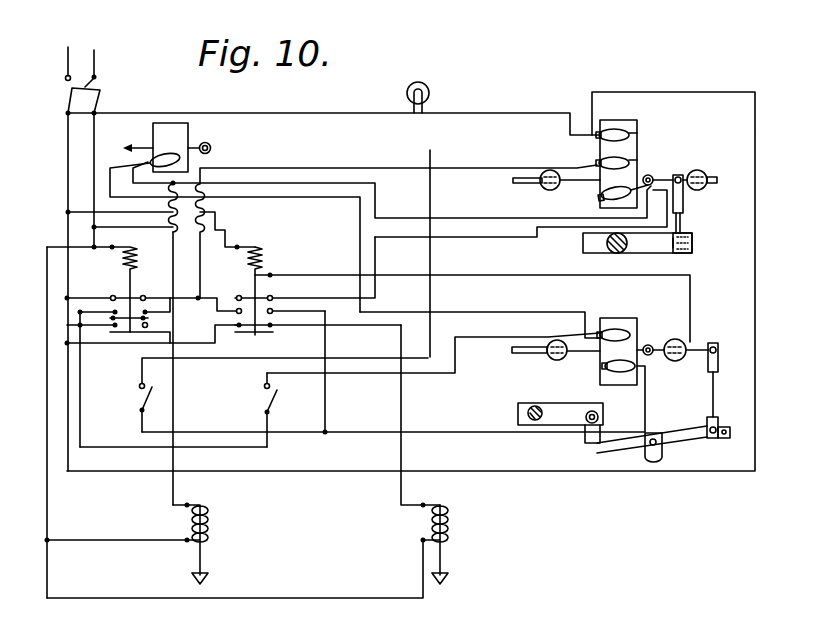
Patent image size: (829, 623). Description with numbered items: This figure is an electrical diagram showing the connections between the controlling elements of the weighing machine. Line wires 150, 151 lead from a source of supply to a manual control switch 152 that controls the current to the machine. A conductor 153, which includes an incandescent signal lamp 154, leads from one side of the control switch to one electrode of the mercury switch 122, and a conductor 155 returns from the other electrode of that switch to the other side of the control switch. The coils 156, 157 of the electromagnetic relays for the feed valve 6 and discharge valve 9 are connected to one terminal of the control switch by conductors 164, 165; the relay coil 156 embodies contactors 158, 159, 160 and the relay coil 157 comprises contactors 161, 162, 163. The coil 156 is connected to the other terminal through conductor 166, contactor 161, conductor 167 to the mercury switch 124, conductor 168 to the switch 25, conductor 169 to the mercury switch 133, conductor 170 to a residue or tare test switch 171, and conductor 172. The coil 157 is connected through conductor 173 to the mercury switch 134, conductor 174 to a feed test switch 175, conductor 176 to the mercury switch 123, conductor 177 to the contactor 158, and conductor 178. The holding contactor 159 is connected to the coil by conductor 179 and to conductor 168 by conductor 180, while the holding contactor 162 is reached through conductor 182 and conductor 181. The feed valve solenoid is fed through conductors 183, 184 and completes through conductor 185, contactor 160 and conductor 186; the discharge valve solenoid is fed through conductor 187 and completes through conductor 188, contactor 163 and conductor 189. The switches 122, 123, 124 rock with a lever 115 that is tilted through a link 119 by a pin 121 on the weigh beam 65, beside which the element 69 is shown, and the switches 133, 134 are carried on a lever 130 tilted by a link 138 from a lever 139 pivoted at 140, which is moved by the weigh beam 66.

The line wire 150 is at (66, 67).
The line wire 151 is at (97, 70).
The manual control switch 152 is at (100, 93).
The conductor 153 is at (275, 113).
The incandescent lamp 154 is at (430, 93).
The conductor 164 is at (95, 150).
The switch 25 is at (167, 147).
The conductor 169 is at (300, 199).
The conductor 168 is at (470, 221).
The conductor 177 is at (347, 170).
The conductor 166 is at (218, 217).
The conductor 180 is at (174, 263).
The conductor 181 is at (214, 312).
The conductor 185 is at (178, 398).
The conductor 165 is at (142, 228).
The relay coil 156 is at (127, 263).
The conductor 178 is at (113, 292).
The contactor 158 is at (137, 296).
The holding contactor 159 is at (150, 316).
The contactor 160 is at (138, 333).
The conductor 189 is at (137, 345).
The conductor 179 is at (100, 308).
The conductor 186 is at (100, 328).
The relay coil 157 is at (264, 258).
The contactor 161 is at (275, 296).
The holding contactor 162 is at (272, 315).
The contactor 163 is at (270, 333).
The conductor 182 is at (328, 407).
The conductor 188 is at (403, 412).
The conductor 173 is at (455, 278).
The conductor 167 is at (572, 227).
The conductor 176 is at (432, 334).
The conductor 170 is at (458, 362).
The conductor 174 is at (462, 435).
The conductor 155 is at (532, 475).
The conductor 172 is at (100, 448).
The feed test switch 175 is at (139, 407).
The residue or tare test switch 171 is at (278, 398).
The conductor 183 is at (46, 473).
The conductor 184 is at (80, 537).
The feed valve 6 is at (206, 578).
The conductor 187 is at (290, 596).
The discharge valve 9 is at (449, 580).
The weigh beam 66 is at (600, 413).
The lever 130 is at (532, 357).
The mercury switch 133 is at (637, 330).
The mercury switch 134 is at (602, 374).
The link 138 is at (712, 390).
The lever 139 is at (687, 441).
The pivot 140 is at (657, 434).
The mercury switch 122 is at (638, 131).
The mercury switch 123 is at (638, 159).
The mercury switch 124 is at (600, 193).
The link 119 is at (683, 203).
The lever 115 is at (715, 177).
The cam 69 is at (612, 253).
The weigh beam 65 is at (693, 245).
The pin 121 is at (677, 251).